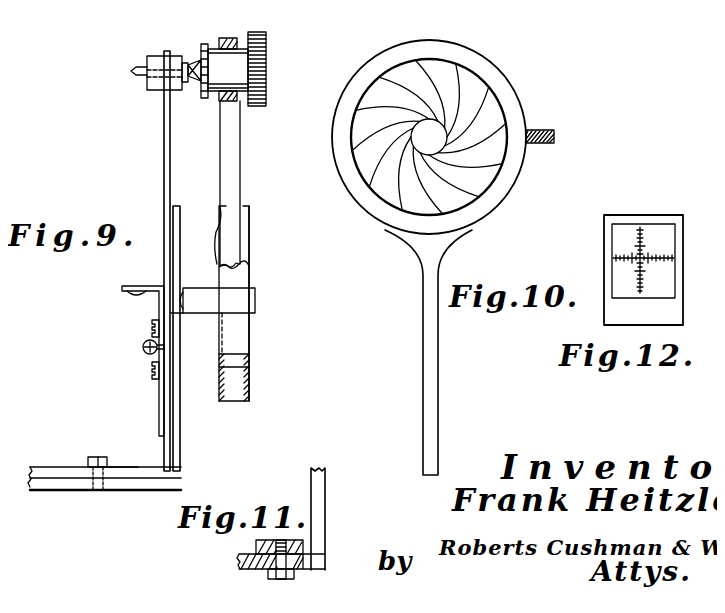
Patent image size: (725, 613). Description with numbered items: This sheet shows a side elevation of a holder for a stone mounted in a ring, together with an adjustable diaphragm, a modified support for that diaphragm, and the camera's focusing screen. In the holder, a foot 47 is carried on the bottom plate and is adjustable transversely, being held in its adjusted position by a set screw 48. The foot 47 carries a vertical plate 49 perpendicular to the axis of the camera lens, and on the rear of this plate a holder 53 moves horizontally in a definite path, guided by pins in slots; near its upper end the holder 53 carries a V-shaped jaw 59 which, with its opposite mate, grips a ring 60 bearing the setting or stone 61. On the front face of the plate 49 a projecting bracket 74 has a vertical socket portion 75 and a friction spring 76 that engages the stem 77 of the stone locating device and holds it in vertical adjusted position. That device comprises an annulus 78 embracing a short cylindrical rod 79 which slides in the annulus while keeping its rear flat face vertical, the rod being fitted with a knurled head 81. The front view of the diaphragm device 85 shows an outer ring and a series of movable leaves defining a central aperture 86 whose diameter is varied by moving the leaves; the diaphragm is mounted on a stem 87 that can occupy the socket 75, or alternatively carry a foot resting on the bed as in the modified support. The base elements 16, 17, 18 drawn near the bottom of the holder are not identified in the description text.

In FIG. 9, the base plate 16 is at (125, 477).
In FIG. 9, the base top surface 17 is at (121, 462).
In FIG. 9, the block on base 18 is at (89, 452).
In FIG. 9, the foot 47 is at (121, 449).
In FIG. 9, the set screw 48 is at (79, 444).
In FIG. 9, the vertical plate 49 is at (177, 423).
In FIG. 9, the holder 53 is at (161, 142).
In FIG. 9, the jaw 59 is at (150, 52).
In FIG. 9, the ring 60 is at (193, 60).
In FIG. 9, the stone 61 is at (201, 88).
In FIG. 9, the bracket 74 is at (207, 309).
In FIG. 9, the socket portion 75 is at (246, 376).
In FIG. 9, the friction spring 76 is at (208, 225).
In FIG. 9, the stem 77 is at (238, 162).
In FIG. 9, the annulus 78 is at (226, 45).
In FIG. 9, the cylindrical rod 79 is at (216, 38).
In FIG. 9, the knurled head 81 is at (263, 46).
In FIG. 10, the diaphragm device 85 is at (511, 97).
In FIG. 10, the central aperture 86 is at (480, 168).
In FIG. 11, the central aperture 86 is at (311, 550).
In FIG. 10, the stem 87 is at (440, 277).
In FIG. 11, the stem 87 is at (321, 511).